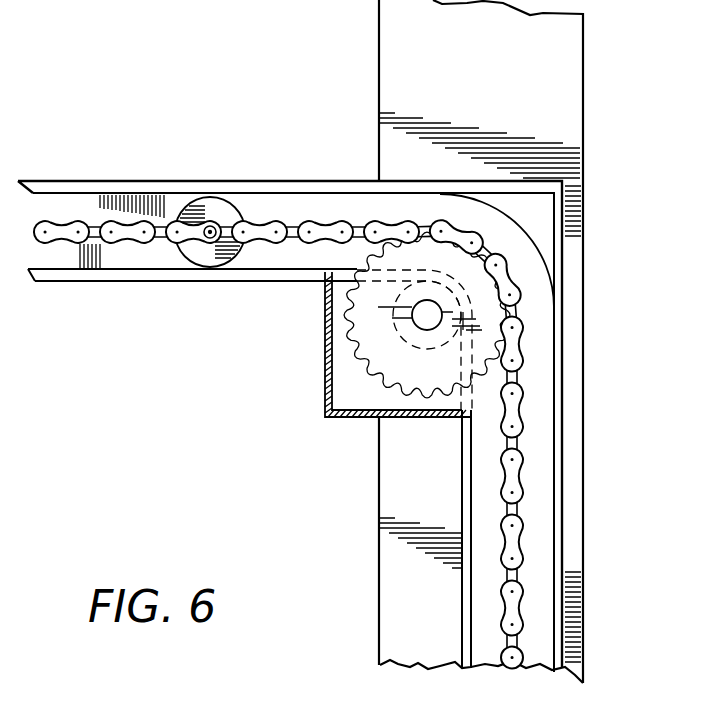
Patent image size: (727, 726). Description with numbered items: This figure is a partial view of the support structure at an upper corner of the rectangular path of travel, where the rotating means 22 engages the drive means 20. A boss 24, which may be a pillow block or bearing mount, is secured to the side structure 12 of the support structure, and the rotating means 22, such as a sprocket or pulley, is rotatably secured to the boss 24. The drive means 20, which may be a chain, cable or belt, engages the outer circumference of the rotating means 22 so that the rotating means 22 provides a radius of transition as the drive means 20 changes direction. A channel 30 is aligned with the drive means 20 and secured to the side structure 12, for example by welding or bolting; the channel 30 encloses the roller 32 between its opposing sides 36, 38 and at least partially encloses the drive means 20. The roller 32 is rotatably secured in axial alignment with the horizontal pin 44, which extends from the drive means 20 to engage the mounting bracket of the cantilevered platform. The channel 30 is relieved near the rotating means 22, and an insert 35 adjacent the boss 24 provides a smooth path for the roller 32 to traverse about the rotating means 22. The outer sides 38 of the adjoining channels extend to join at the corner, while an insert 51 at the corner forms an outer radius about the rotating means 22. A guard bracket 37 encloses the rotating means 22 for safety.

The first side structure 12 is at (583, 200).
The first drive means 20 is at (498, 470).
The rotating means 22 is at (347, 307).
The boss 24 is at (378, 330).
The first channel 30 is at (167, 147).
The first roller 32 is at (212, 226).
The insert 35 is at (495, 252).
The side of channel 36 is at (145, 262).
The guard bracket 37 is at (343, 417).
The outer side of channel 38 is at (86, 199).
The first horizontal pin 44 is at (215, 228).
The insert 51 is at (538, 263).